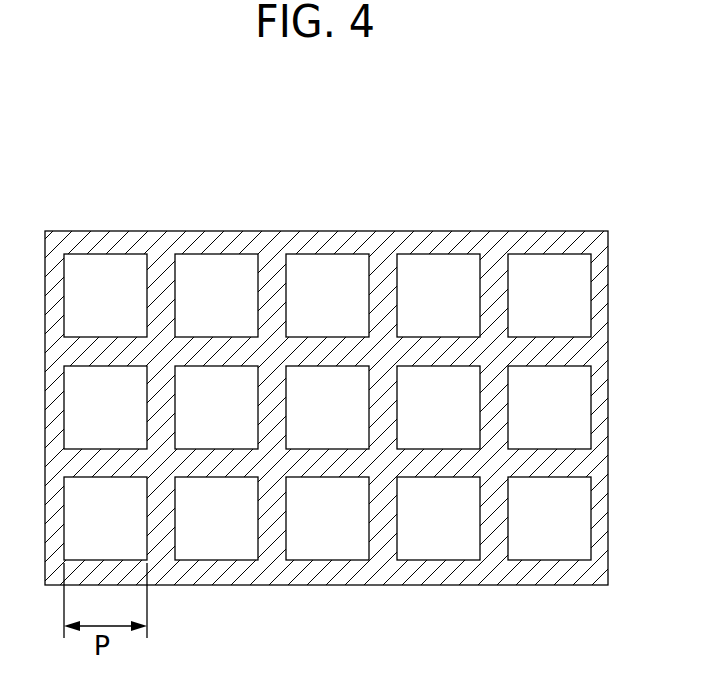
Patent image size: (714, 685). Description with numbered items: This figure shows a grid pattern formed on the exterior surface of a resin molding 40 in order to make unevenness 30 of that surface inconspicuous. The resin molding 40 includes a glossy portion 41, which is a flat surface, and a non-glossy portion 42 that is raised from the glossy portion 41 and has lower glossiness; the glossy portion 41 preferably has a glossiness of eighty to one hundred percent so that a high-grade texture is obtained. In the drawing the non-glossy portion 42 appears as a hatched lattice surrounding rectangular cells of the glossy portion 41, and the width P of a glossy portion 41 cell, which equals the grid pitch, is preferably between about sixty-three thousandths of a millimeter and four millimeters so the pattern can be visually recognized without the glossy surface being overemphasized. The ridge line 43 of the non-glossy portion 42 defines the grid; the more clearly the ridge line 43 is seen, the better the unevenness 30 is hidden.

The resin molding 40 is at (183, 195).
The unevenness 30 is at (225, 267).
The glossy portion 41 is at (547, 302).
The non-glossy portion 42 is at (495, 270).
The ridge line 43 is at (513, 293).